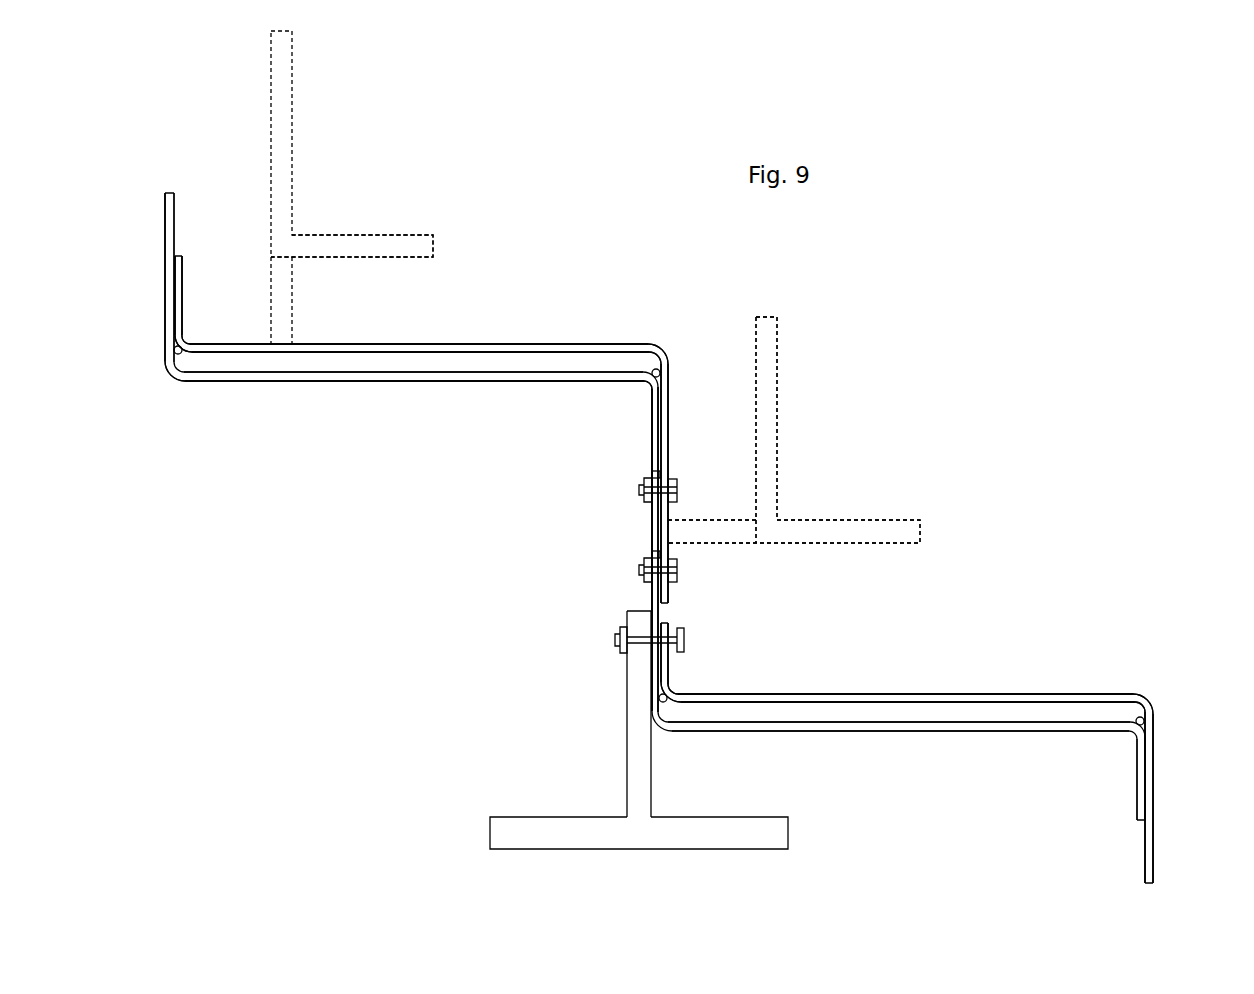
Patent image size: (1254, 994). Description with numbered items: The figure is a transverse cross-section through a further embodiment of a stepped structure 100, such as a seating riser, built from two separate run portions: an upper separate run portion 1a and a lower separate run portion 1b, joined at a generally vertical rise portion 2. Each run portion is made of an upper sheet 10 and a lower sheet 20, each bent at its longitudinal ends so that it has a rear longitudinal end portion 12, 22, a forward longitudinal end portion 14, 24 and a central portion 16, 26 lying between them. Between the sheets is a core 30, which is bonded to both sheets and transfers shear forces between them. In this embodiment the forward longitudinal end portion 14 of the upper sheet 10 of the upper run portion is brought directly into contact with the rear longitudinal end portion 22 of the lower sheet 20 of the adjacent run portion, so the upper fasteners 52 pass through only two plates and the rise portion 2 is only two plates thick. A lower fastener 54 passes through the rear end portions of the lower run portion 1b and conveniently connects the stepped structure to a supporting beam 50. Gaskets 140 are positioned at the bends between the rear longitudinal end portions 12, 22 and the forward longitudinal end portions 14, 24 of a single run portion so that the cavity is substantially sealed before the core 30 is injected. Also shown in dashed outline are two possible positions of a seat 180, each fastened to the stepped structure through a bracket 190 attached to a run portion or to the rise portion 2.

The upper separate run portion 1a is at (578, 252).
The lower separate run portion 1b is at (1063, 598).
The rise portion 2 is at (613, 588).
The upper sheet 10 is at (510, 337).
The rear longitudinal end portion of the upper sheet 12 is at (177, 288).
The forward longitudinal end portion of the upper sheet 14 is at (663, 385).
The central portion of the upper sheet 16 is at (425, 348).
The lower sheet 20 is at (517, 383).
The rear longitudinal end portion of the lower sheet 22 is at (170, 227).
The forward longitudinal end portion of the lower sheet 24 is at (655, 445).
The central portion of the lower sheet 26 is at (427, 375).
The core 30 is at (553, 363).
The supporting beam 50 is at (643, 726).
The upper fastener 52 is at (672, 488).
The lower fastener 54 is at (622, 650).
The stepped structure 100 is at (828, 400).
The gasket 140 is at (177, 358).
The seat 180 is at (352, 245).
The bracket 190 is at (283, 303).